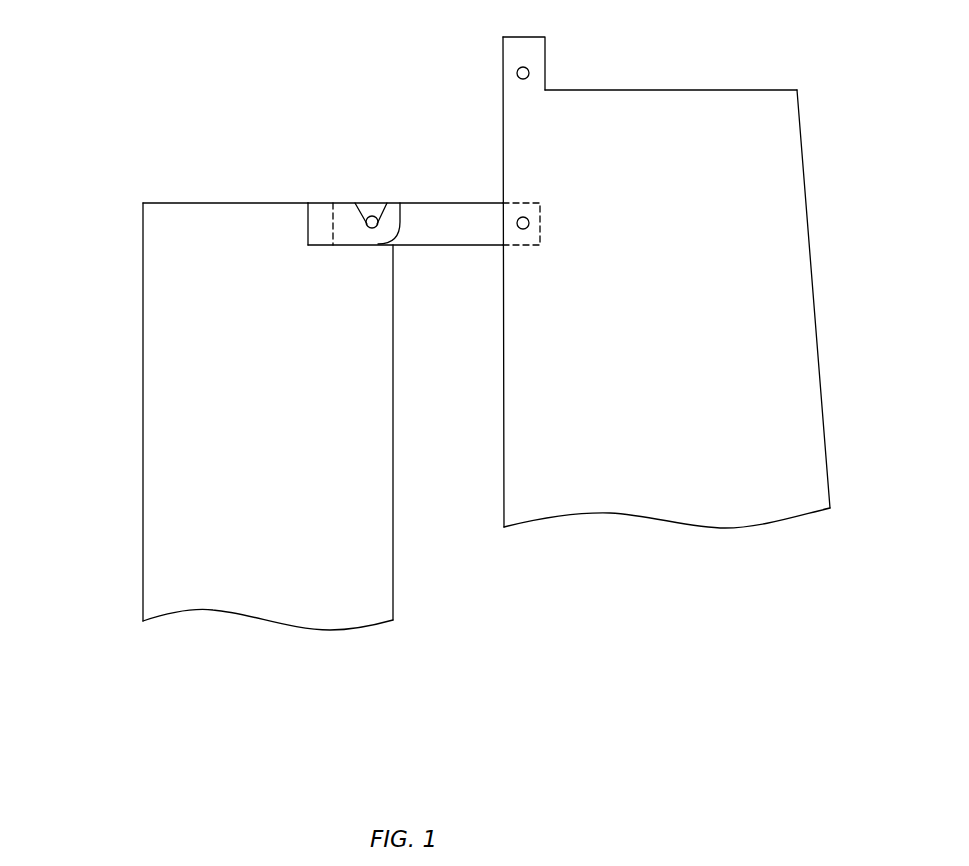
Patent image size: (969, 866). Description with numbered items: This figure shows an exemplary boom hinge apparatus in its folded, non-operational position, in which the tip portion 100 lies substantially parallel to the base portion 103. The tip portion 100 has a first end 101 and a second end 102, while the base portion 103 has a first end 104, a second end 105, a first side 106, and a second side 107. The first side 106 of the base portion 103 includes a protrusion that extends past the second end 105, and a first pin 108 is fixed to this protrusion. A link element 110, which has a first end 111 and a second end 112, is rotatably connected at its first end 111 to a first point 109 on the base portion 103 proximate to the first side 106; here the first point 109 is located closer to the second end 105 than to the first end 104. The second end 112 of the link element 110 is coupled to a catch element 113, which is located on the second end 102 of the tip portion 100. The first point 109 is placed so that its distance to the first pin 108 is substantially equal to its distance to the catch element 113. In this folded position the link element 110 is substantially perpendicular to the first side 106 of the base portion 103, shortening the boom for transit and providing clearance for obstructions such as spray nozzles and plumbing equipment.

The tip portion 100 is at (200, 347).
The first end 101 is at (282, 622).
The second end 102 is at (165, 203).
The base portion 103 is at (552, 317).
The first end 104 is at (688, 525).
The second end 105 is at (717, 90).
The first side 106 is at (503, 383).
The second side 107 is at (813, 307).
The first pin 108 is at (529, 73).
The first point 109 is at (526, 217).
The link element 110 is at (480, 203).
The first end 111 is at (542, 230).
The second end 112 is at (333, 203).
The catch element 113 is at (323, 217).